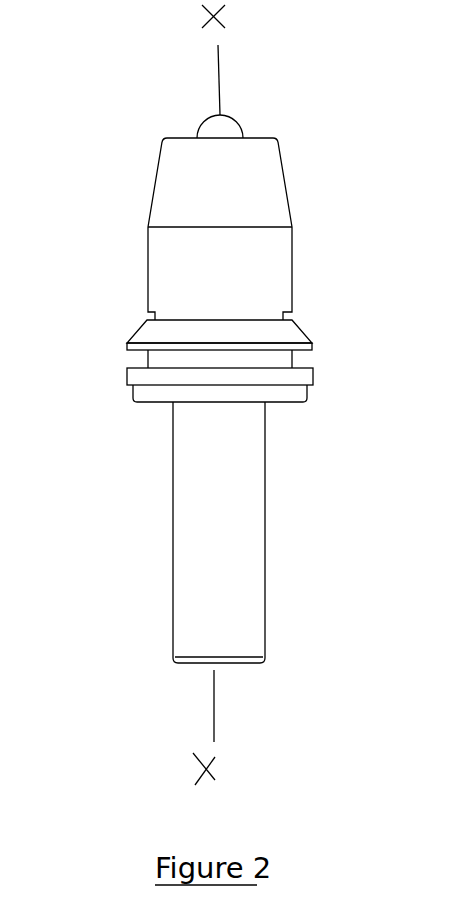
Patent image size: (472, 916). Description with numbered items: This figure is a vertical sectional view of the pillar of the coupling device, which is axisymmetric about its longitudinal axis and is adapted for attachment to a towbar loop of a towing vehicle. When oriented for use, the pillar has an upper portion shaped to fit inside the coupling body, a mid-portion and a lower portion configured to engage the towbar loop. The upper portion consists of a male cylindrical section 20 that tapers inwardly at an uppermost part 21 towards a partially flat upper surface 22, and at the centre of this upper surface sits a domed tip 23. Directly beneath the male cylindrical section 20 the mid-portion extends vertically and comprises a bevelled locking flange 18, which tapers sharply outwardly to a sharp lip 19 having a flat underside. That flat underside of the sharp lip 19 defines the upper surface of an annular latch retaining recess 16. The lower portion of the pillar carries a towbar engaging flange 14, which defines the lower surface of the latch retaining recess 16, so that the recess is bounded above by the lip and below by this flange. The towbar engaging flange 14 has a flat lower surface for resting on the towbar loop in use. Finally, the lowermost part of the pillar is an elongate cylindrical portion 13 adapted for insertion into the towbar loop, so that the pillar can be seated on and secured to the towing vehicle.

The elongate cylindrical portion 13 is at (265, 547).
The towbar engaging flange 14 is at (317, 377).
The annular latch retaining recess 16 is at (296, 357).
The bevelled locking flange 18 is at (138, 330).
The sharp lip 19 is at (122, 352).
The male cylindrical section 20 is at (293, 273).
The uppermost part 21 is at (152, 200).
The partially flat upper surface 22 is at (183, 137).
The domed tip 23 is at (212, 113).